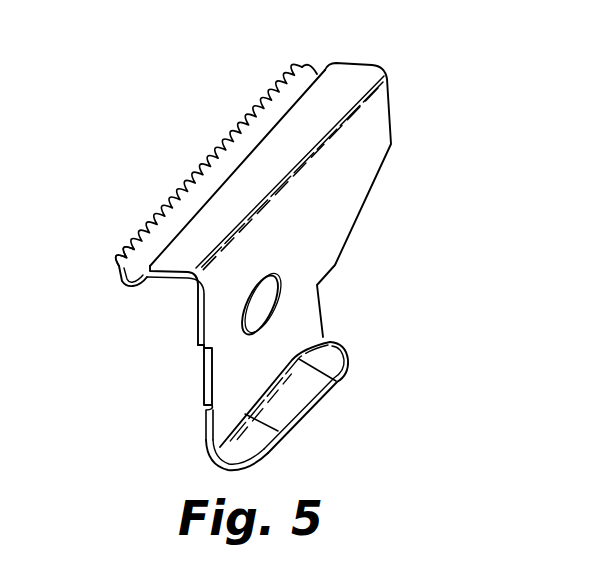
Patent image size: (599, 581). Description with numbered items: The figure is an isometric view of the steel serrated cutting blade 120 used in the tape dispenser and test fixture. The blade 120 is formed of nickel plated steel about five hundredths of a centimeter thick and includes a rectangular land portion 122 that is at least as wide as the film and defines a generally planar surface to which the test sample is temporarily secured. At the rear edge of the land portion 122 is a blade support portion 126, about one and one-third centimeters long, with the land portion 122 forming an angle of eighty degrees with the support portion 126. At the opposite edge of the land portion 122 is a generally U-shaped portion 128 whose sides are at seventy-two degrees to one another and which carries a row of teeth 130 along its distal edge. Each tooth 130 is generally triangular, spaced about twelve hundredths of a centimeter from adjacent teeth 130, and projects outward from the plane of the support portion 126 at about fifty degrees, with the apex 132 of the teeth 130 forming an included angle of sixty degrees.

The steel serrated cutting blade 120 is at (440, 58).
The land portion 122 is at (343, 80).
The blade support portion 126 is at (340, 202).
The generally U-shaped portion 128 is at (137, 291).
The teeth 130 is at (194, 183).
The apex 132 is at (131, 244).